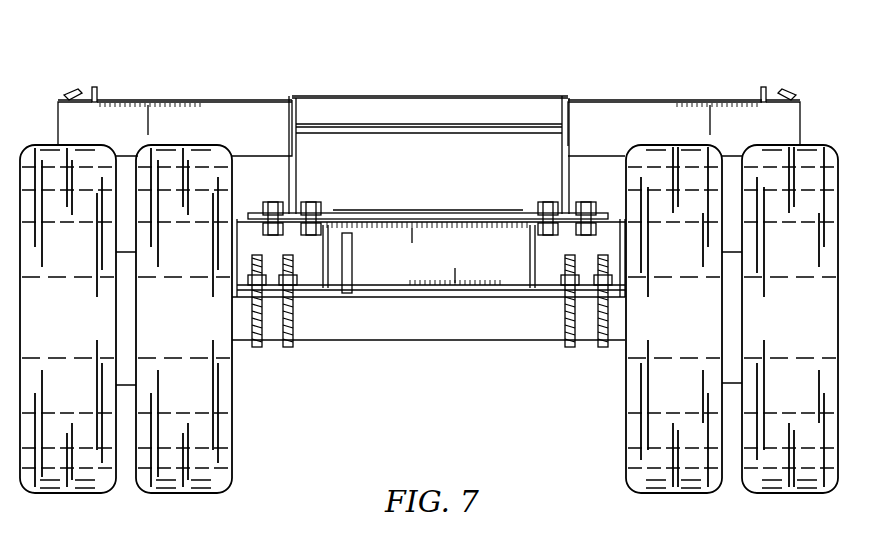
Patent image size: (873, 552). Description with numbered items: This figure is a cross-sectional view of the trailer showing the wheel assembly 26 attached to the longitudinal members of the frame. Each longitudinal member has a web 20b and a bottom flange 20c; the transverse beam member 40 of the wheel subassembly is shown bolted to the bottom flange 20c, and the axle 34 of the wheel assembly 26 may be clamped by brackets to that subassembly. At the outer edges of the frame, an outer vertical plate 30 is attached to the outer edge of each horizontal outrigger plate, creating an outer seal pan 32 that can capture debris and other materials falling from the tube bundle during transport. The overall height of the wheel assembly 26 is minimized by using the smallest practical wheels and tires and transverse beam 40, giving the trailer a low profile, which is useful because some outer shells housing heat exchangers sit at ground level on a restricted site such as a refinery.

The web 20b is at (297, 168).
The bottom flange 20c is at (283, 201).
The wheel assembly 26 is at (793, 490).
The outer vertical plate 30 is at (91, 87).
The outer seal pan 32 is at (171, 56).
The axle 34 is at (452, 322).
The transverse beam member 40 is at (397, 268).